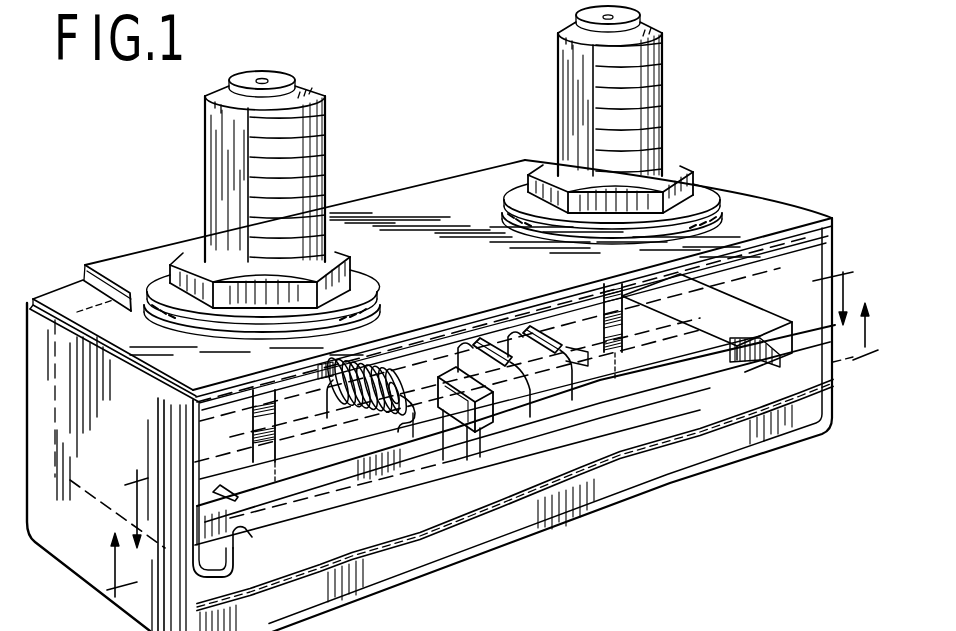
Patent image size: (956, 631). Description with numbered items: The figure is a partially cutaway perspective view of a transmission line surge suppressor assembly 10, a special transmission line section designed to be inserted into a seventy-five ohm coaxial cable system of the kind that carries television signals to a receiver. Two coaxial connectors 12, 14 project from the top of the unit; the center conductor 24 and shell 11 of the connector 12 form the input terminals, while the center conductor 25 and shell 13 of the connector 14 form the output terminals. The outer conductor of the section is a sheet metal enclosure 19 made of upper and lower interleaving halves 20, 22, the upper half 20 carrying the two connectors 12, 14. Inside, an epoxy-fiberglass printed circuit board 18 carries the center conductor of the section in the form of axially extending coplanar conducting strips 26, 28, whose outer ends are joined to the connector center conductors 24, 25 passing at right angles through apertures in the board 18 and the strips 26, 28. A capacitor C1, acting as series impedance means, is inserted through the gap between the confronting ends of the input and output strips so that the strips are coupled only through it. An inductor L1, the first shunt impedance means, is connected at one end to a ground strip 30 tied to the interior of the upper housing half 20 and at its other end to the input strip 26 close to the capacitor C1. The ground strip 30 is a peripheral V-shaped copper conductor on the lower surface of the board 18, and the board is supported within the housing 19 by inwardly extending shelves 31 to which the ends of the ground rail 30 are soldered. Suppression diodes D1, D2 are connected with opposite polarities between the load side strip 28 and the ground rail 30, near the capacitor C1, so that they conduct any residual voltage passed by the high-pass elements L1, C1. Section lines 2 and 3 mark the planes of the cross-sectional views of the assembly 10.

The surge suppressor assembly 10 is at (455, 112).
The shell 11 is at (213, 170).
The coaxial connector 12 is at (330, 132).
The shell 13 is at (668, 116).
The coaxial connector 14 is at (562, 55).
The printed circuit board 18 is at (763, 306).
The sheet metal enclosure 19 is at (748, 182).
The upper housing half 20 is at (385, 192).
The lower housing half 22 is at (831, 210).
The center conductor 24 is at (274, 528).
The center conductor 25 is at (610, 415).
The input conducting strip 26 is at (238, 540).
The output conducting strip 28 is at (693, 385).
The ground strip 30 is at (252, 433).
The shelves 31 is at (230, 567).
The section line 2- 2 is at (465, 396).
The section line 3- 3 is at (487, 450).
The inductor L1 is at (398, 432).
The capacitor C1 is at (493, 393).
The suppression diode D1 is at (533, 383).
The suppression diode D2 is at (580, 345).